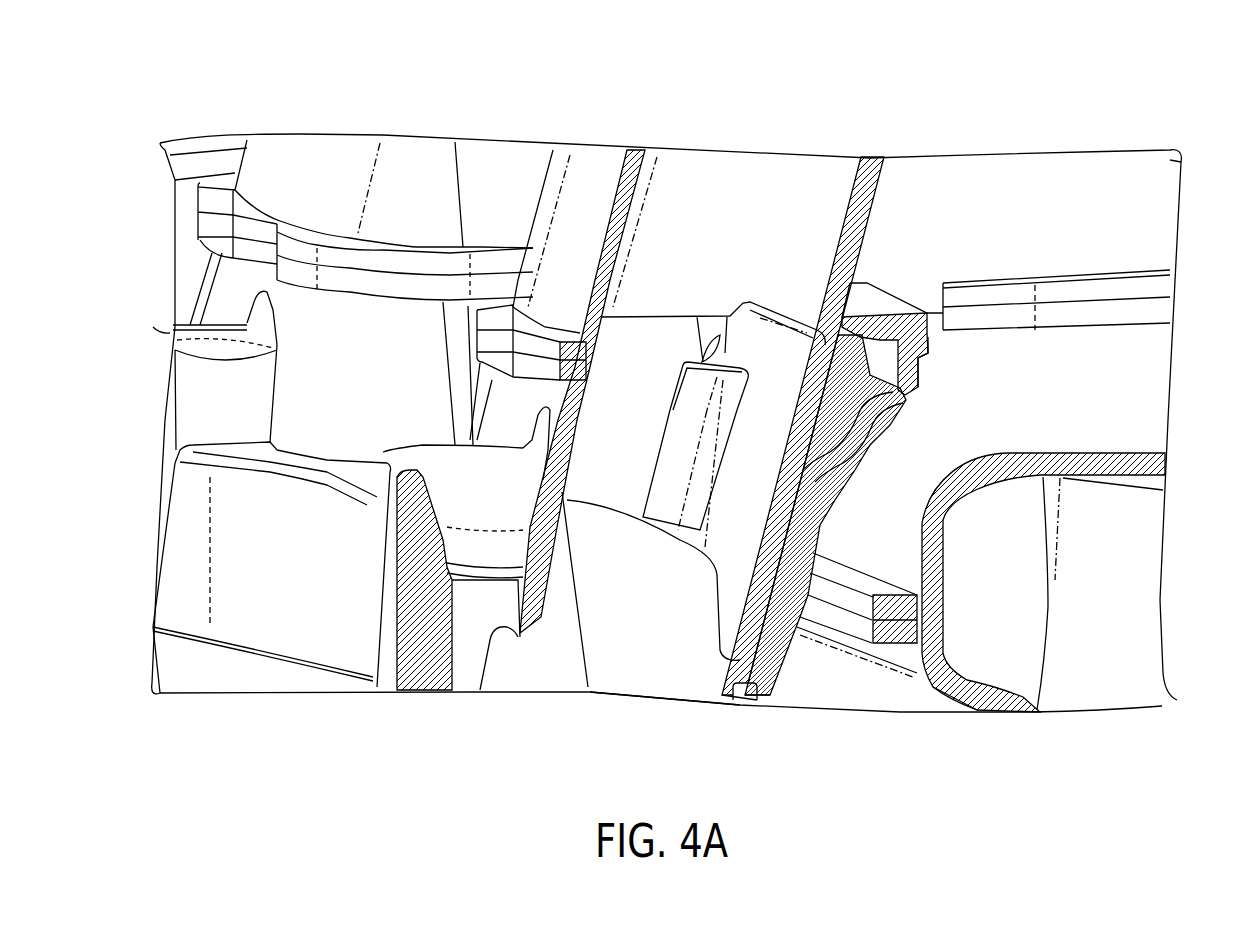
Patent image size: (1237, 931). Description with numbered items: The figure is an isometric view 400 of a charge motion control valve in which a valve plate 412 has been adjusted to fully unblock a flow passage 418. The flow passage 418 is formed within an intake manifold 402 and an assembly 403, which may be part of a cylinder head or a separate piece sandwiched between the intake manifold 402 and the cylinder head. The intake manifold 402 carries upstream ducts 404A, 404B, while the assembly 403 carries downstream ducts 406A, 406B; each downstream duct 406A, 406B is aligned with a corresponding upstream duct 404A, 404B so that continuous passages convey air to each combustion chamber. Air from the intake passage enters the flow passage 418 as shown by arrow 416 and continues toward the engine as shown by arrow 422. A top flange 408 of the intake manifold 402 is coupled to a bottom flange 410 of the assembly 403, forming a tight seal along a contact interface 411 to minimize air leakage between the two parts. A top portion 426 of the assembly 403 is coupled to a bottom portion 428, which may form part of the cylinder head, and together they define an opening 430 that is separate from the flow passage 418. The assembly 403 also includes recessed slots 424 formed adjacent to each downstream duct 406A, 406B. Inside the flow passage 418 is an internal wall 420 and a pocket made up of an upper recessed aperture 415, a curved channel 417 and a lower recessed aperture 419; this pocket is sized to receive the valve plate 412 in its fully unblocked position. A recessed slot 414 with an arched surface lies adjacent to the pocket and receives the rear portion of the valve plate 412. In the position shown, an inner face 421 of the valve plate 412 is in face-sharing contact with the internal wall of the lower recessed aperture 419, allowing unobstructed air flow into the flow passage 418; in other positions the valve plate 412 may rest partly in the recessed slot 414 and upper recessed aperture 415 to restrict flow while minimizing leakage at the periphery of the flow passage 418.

The isometric view 400 is at (150, 96).
The intake manifold 402 is at (1015, 175).
The assembly 403 is at (262, 613).
The upstream duct 404A is at (603, 170).
The upstream duct 404B is at (390, 155).
The downstream duct 406A is at (470, 390).
The downstream duct 406B is at (327, 380).
The top flange 408 is at (880, 300).
The bottom flange 410 is at (920, 345).
The contact interface 411 is at (1175, 300).
The valve plate 412 is at (703, 667).
The recessed slot 414 is at (838, 352).
The upper recessed aperture 415 is at (900, 395).
The arrow 416 is at (757, 120).
The curved channel 417 is at (858, 455).
The flow passage 418 is at (662, 329).
The lower recessed aperture 419 is at (757, 697).
The internal wall 420 is at (608, 472).
The inner face 421 is at (820, 540).
The arrow 422 is at (589, 720).
The recessed slot 424 is at (200, 352).
The top portion 426 is at (1175, 462).
The bottom portion 428 is at (930, 670).
The opening 430 is at (1108, 695).